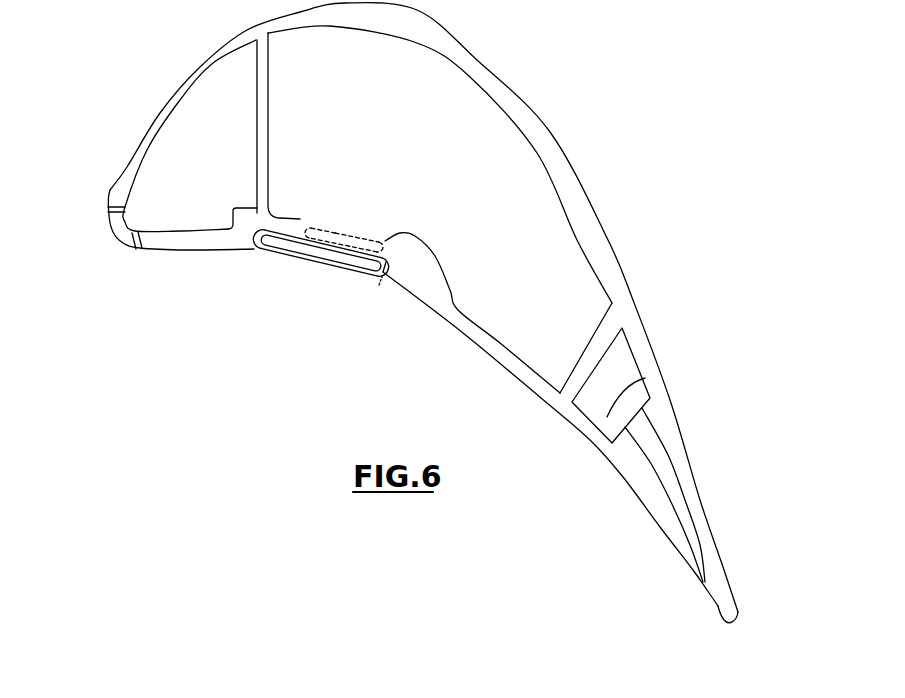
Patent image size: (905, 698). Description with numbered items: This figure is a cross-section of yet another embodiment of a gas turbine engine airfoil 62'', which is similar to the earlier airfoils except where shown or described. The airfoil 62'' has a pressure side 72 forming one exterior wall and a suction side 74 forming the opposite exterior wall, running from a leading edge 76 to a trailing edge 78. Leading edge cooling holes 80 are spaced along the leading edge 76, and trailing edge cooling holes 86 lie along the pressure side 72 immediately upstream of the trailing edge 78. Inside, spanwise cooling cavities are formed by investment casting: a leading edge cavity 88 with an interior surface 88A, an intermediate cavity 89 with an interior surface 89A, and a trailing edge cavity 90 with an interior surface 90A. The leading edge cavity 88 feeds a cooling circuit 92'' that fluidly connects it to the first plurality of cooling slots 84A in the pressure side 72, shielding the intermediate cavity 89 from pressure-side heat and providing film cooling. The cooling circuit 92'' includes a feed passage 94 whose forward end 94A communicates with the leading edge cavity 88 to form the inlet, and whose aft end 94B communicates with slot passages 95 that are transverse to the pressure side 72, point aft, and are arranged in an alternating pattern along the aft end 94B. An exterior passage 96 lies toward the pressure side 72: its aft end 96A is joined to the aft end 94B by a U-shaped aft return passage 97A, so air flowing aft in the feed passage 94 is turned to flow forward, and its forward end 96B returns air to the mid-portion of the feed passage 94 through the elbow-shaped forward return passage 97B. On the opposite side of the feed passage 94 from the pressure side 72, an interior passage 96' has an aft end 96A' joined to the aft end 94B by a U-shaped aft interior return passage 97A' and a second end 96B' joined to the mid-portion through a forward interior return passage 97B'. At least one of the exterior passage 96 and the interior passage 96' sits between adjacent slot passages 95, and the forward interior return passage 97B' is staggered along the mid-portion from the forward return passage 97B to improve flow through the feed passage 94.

The airfoil 62'' is at (412, 330).
The pressure side 72 is at (623, 477).
The suction side 74 is at (593, 203).
The leading edge 76 is at (110, 235).
The trailing edge 78 is at (732, 622).
The leading edge cooling holes 80 is at (108, 210).
The first plurality of cooling slots 84A is at (379, 271).
The trailing edge cooling holes 86 is at (697, 577).
The leading edge cavity 88 is at (169, 132).
The interior surface of leading edge cavity 88A is at (180, 103).
The intermediate cavity 89 is at (513, 175).
The interior surface of intermediate cavity 89A is at (432, 53).
The trailing edge cavity 90 is at (616, 373).
The interior surface of trailing edge cavity 90A is at (590, 440).
The cooling circuit 92'' is at (281, 307).
The feed passage 94 is at (278, 215).
The forward end of feed passage 94A is at (243, 205).
The aft end of feed passage 94B is at (388, 266).
The slot passage 95 is at (378, 297).
The exterior passage 96 is at (313, 275).
The aft end of exterior passage 96A is at (324, 310).
The forward end of exterior passage 96B is at (223, 266).
The aft return passage 97A is at (337, 317).
The forward return passage 97B is at (236, 254).
The interior passage 96' is at (391, 198).
The aft end of interior passage 96A' is at (408, 231).
The second end of interior passage 96B' is at (359, 197).
The aft interior return passage 97A' is at (393, 245).
The forward interior return passage 97B' is at (343, 188).